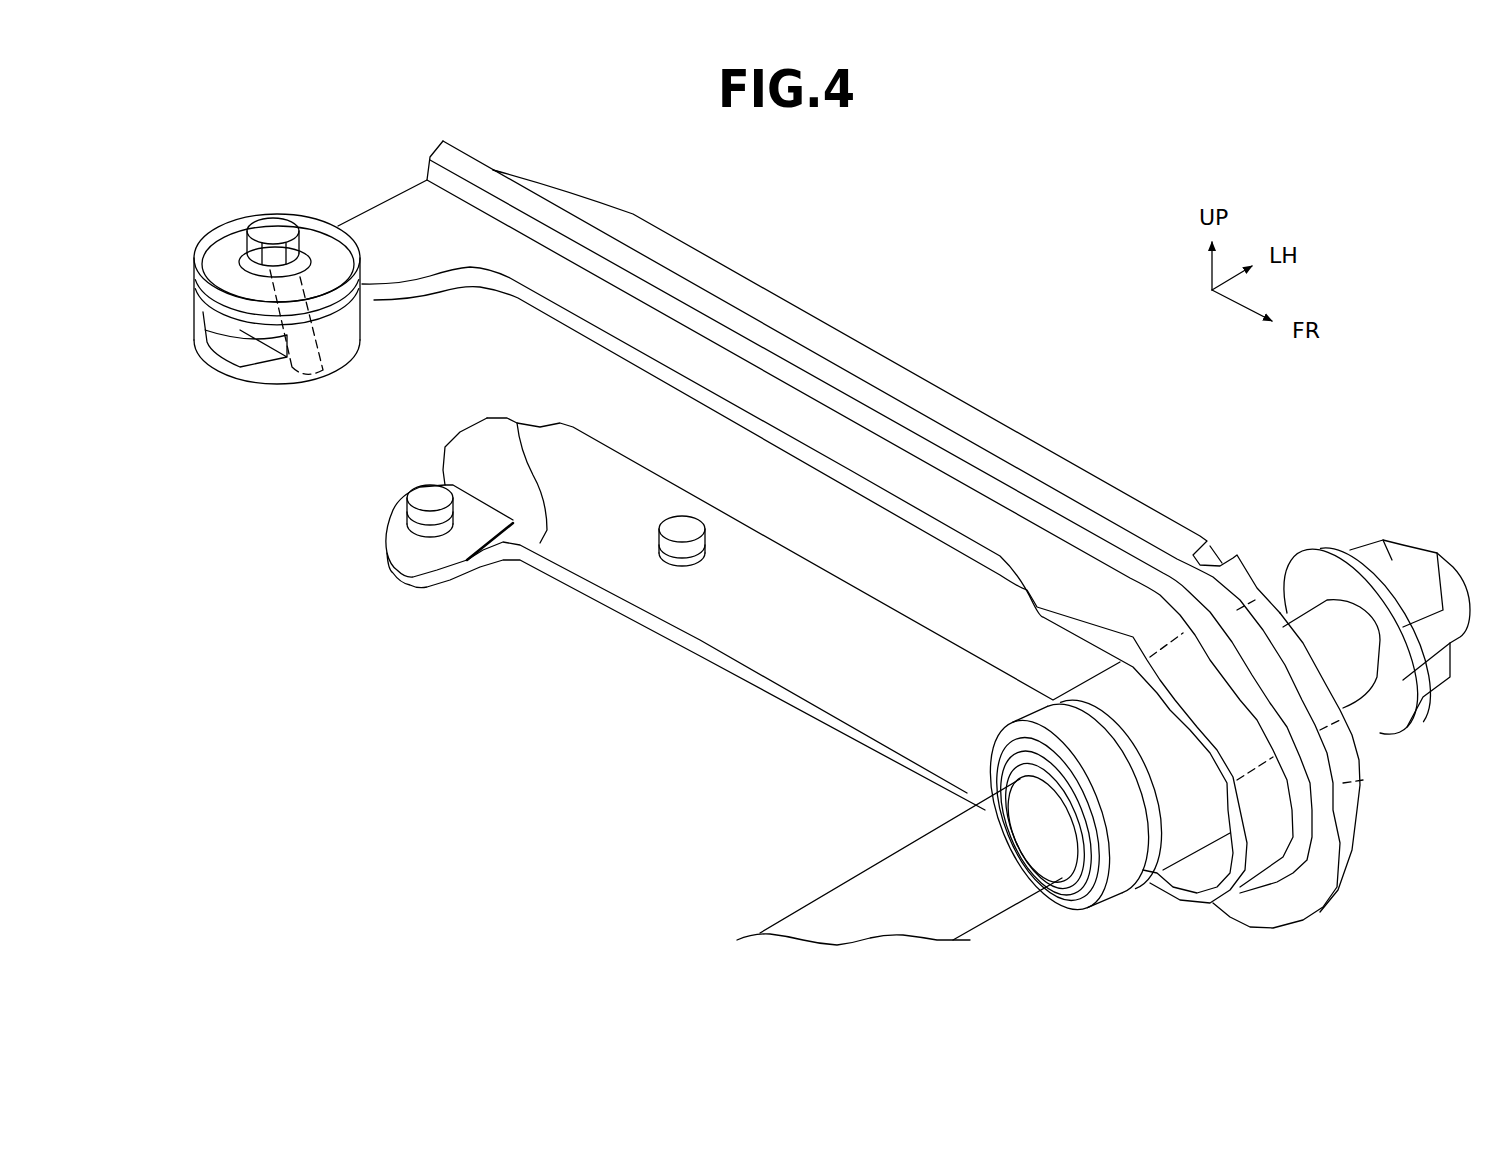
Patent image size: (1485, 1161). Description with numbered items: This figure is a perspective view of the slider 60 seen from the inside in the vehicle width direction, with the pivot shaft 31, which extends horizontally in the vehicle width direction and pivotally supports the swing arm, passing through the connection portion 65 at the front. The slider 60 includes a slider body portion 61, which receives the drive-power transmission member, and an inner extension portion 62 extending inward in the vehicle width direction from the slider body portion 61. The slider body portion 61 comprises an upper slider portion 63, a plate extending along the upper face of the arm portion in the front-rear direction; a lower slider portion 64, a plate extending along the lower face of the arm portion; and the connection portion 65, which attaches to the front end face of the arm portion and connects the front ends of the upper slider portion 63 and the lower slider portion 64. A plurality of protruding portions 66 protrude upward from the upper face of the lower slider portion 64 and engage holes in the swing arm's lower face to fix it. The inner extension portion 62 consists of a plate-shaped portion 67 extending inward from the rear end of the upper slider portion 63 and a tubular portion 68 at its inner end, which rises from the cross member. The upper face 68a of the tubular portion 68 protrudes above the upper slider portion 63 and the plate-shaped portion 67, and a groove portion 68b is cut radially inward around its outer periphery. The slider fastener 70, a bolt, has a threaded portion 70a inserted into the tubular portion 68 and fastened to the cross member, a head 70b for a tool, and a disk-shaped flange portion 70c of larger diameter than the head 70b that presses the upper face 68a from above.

The slider 60 is at (571, 165).
The slider body portion 61 is at (869, 338).
The inner extension portion 62 is at (360, 210).
The upper slider portion 63 is at (963, 412).
The lower slider portion 64 is at (752, 643).
The connection portion 65 is at (1335, 769).
The protruding portions 66 is at (426, 504).
The plate-shaped portion 67 is at (382, 247).
The tubular portion 68 is at (347, 353).
The upper face 68a is at (207, 317).
The groove portion 68b is at (237, 343).
The slider fastener 70 is at (243, 247).
The threaded portion 70a is at (286, 392).
The head 70b is at (277, 230).
The flange portion 70c is at (210, 260).
The pivot shaft 31 is at (1000, 910).